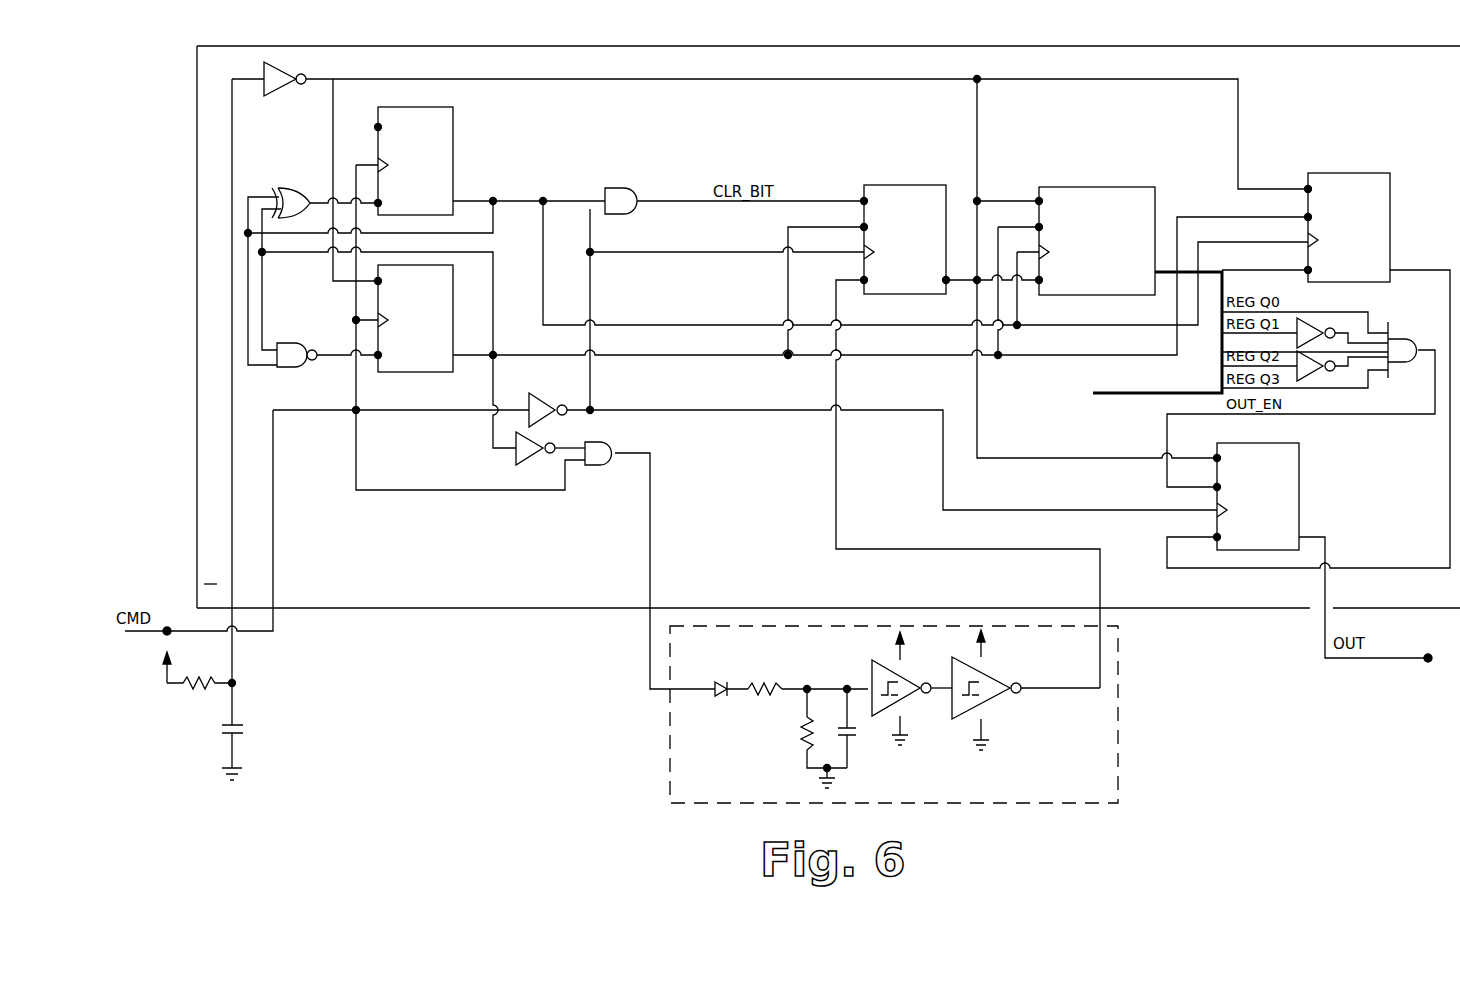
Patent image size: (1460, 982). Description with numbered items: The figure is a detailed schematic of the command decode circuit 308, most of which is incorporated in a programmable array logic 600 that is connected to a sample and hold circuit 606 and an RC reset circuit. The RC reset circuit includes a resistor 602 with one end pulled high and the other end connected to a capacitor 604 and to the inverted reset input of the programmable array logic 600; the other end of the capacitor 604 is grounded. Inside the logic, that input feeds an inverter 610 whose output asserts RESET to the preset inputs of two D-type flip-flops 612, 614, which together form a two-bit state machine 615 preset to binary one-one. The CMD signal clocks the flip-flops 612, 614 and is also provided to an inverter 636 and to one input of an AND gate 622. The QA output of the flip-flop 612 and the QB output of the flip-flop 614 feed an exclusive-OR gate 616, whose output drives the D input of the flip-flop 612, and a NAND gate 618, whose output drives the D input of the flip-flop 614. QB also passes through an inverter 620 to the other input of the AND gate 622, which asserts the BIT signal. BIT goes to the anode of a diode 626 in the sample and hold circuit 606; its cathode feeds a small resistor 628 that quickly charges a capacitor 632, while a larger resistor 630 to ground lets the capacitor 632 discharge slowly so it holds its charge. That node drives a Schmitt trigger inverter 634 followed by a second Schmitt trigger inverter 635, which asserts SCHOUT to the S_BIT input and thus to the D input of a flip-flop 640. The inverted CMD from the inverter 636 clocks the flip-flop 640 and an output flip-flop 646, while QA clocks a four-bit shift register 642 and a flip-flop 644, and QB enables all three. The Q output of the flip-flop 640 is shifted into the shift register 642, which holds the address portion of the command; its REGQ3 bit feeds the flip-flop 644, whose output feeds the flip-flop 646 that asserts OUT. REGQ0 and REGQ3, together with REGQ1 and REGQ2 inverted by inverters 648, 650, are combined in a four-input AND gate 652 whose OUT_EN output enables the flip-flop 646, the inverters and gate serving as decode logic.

The command decode circuit 308 is at (1235, 668).
The programmable array logic 600 is at (458, 607).
The resistor 602 is at (201, 690).
The capacitor 604 is at (245, 730).
The sample and hold circuit 606 is at (668, 762).
The inverter 610 is at (264, 97).
The D-type flip-flop 612 is at (453, 140).
The D-type flip-flop 614 is at (428, 372).
The two-bit state machine 615 is at (497, 168).
The exclusive-OR gate 616 is at (300, 190).
The NAND gate 618 is at (297, 345).
The inverter 620 is at (518, 455).
The AND gate 622 is at (596, 470).
The diode 626 is at (723, 700).
The resistor 628 is at (770, 683).
The resistor 630 is at (625, 188).
The capacitor 632 is at (860, 735).
The Schmitt trigger inverter 634 is at (876, 673).
The Schmitt trigger inverter 635 is at (986, 708).
The inverter 636 is at (556, 396).
The D-type flip-flop 640 is at (921, 185).
The four-bit shift register 642 is at (1100, 187).
The D-type flip-flop 644 is at (1362, 173).
The D-type flip-flop 646 is at (1300, 502).
The inverter 648 is at (1305, 326).
The inverter 650 is at (1305, 383).
The four-input AND gate 652 is at (1410, 365).